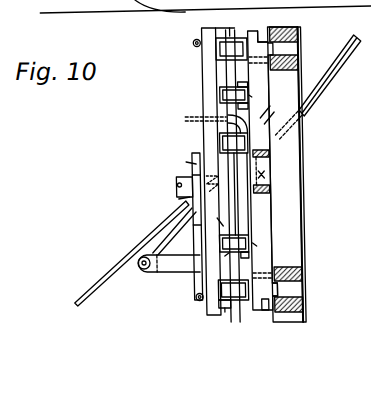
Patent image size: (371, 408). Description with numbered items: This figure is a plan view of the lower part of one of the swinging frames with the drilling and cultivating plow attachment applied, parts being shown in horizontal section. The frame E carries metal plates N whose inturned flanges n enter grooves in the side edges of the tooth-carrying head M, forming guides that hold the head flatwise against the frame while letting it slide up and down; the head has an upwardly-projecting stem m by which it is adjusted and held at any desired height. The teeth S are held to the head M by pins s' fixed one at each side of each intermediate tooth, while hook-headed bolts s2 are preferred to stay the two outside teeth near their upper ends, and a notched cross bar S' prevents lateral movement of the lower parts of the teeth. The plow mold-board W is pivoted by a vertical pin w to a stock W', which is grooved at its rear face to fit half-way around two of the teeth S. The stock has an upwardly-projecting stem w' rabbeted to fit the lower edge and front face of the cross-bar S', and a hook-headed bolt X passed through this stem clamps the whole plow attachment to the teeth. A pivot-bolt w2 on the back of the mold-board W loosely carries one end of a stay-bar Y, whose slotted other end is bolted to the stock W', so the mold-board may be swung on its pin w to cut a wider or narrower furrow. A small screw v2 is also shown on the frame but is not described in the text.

The frame E is at (296, 167).
The metal plates N is at (274, 30).
The inturned flanges n is at (265, 165).
The head M is at (277, 170).
The stem m is at (267, 180).
The plow mold-board W is at (218, 170).
The stock W' is at (169, 217).
The vertical pin w is at (216, 226).
The stem w' is at (178, 183).
The pivot-bolt w2 is at (140, 270).
The teeth S is at (233, 176).
The cross bar S' is at (212, 171).
The pins s' is at (237, 178).
The hook-headed bolts s2 is at (220, 309).
The screw v2 is at (193, 301).
The bolt X is at (171, 185).
The stay-bar Y is at (167, 277).